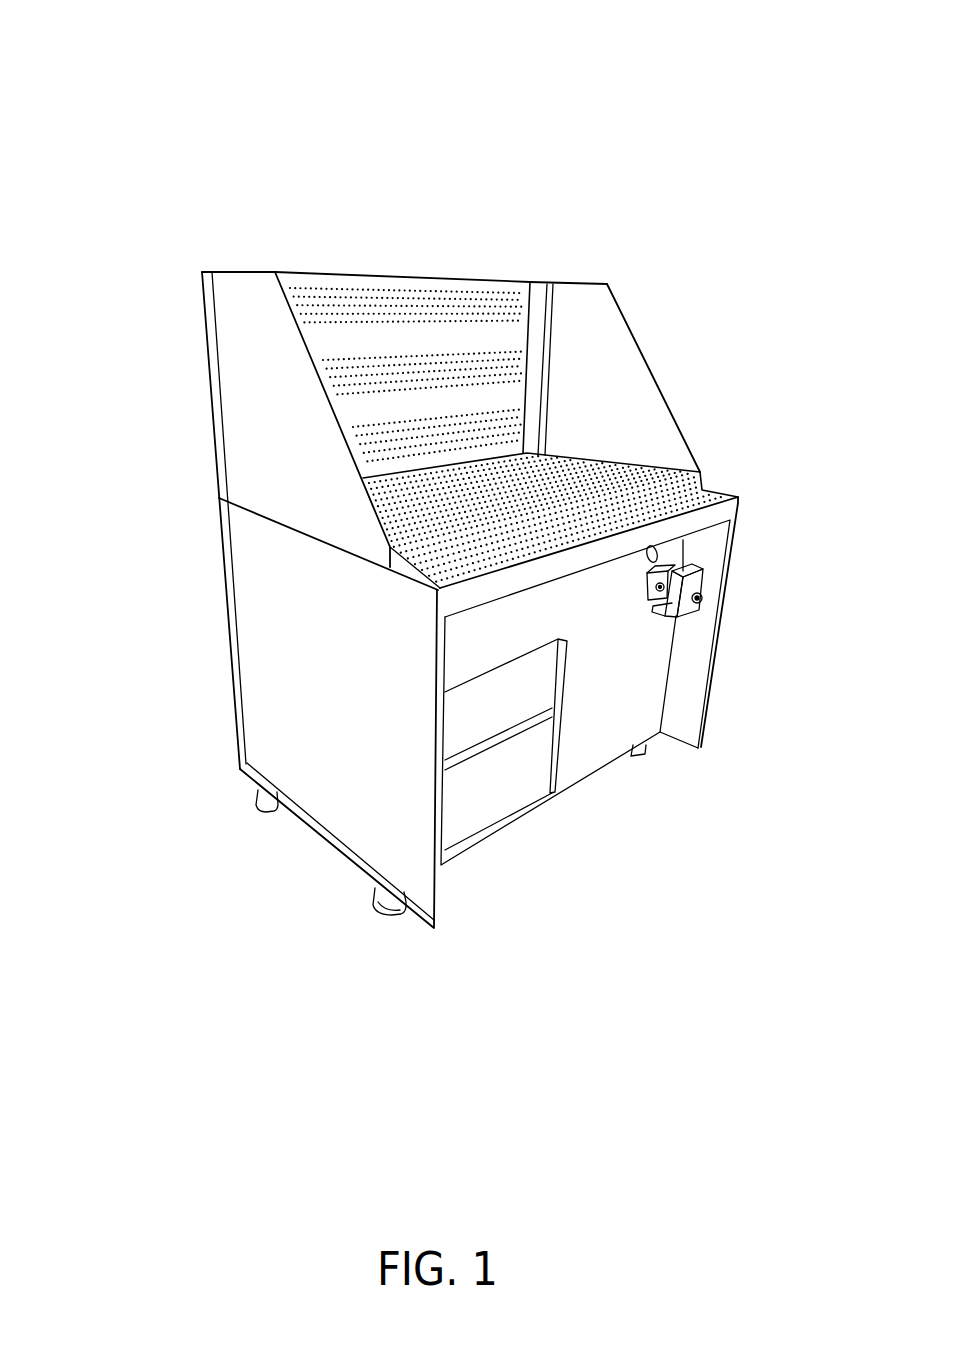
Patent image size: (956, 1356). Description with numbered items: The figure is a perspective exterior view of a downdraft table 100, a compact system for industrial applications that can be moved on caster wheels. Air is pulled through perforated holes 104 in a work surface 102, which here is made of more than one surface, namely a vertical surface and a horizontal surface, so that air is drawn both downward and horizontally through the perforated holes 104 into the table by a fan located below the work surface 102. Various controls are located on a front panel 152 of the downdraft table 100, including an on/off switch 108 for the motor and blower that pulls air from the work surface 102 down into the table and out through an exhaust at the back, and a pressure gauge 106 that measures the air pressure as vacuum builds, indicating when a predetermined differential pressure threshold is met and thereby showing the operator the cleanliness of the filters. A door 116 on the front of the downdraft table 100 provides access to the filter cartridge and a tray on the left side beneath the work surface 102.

The downdraft table 100 is at (129, 52).
The work surface 102 is at (655, 456).
The perforated holes 104 is at (306, 318).
The pressure gauge 106 is at (657, 553).
The on/off switch 108 is at (704, 600).
The door 116 is at (482, 793).
The front panel 152 is at (618, 718).